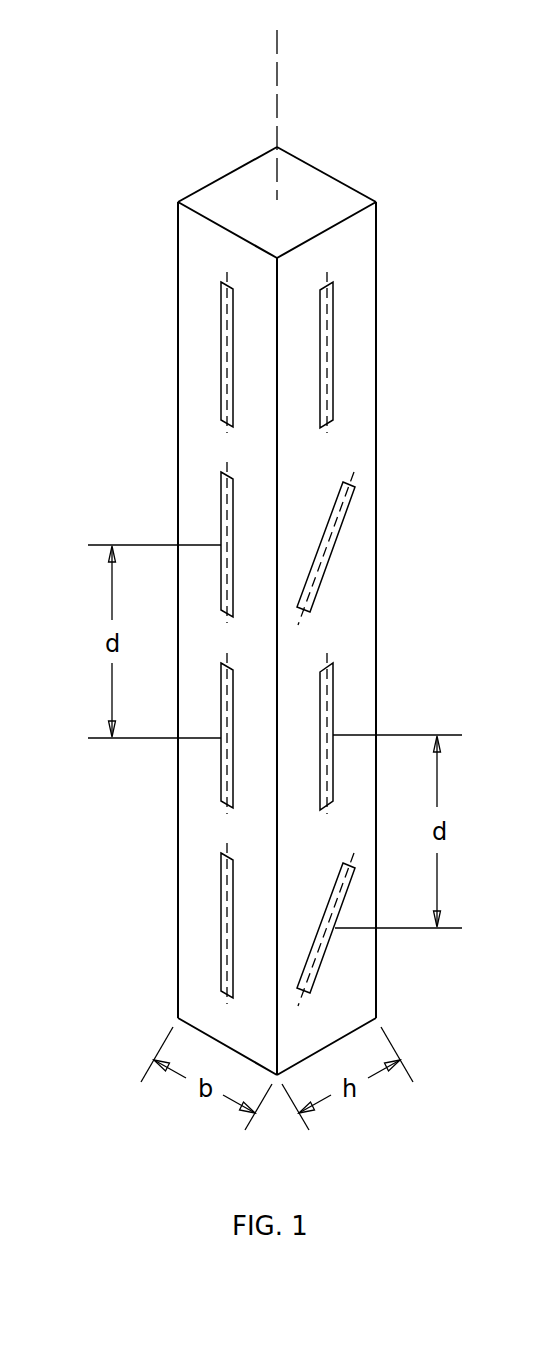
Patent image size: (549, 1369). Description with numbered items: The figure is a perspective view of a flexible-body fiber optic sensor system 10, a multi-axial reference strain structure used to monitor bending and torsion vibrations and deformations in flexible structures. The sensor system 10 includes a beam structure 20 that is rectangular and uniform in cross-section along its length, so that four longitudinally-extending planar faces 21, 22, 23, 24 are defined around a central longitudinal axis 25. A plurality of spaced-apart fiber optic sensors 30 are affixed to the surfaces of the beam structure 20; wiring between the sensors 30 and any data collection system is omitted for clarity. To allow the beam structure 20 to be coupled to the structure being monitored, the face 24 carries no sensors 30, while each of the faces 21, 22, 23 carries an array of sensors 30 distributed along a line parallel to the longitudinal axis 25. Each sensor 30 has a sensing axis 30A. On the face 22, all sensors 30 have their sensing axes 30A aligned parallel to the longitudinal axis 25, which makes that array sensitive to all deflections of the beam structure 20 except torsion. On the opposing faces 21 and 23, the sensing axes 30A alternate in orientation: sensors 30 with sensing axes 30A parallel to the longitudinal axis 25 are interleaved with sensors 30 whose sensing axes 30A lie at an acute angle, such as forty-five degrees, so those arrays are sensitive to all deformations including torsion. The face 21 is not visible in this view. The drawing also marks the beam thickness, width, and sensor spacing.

The flexible-body fiber optic sensor system 10 is at (163, 78).
The beam structure 20 is at (178, 803).
The face 21 is at (230, 172).
The face 22 is at (190, 246).
The face 23 is at (360, 240).
The face 24 is at (329, 174).
The longitudinal axis 25 is at (278, 84).
The fiber optic sensor 30 is at (221, 361).
The sensing axis 30A is at (225, 396).